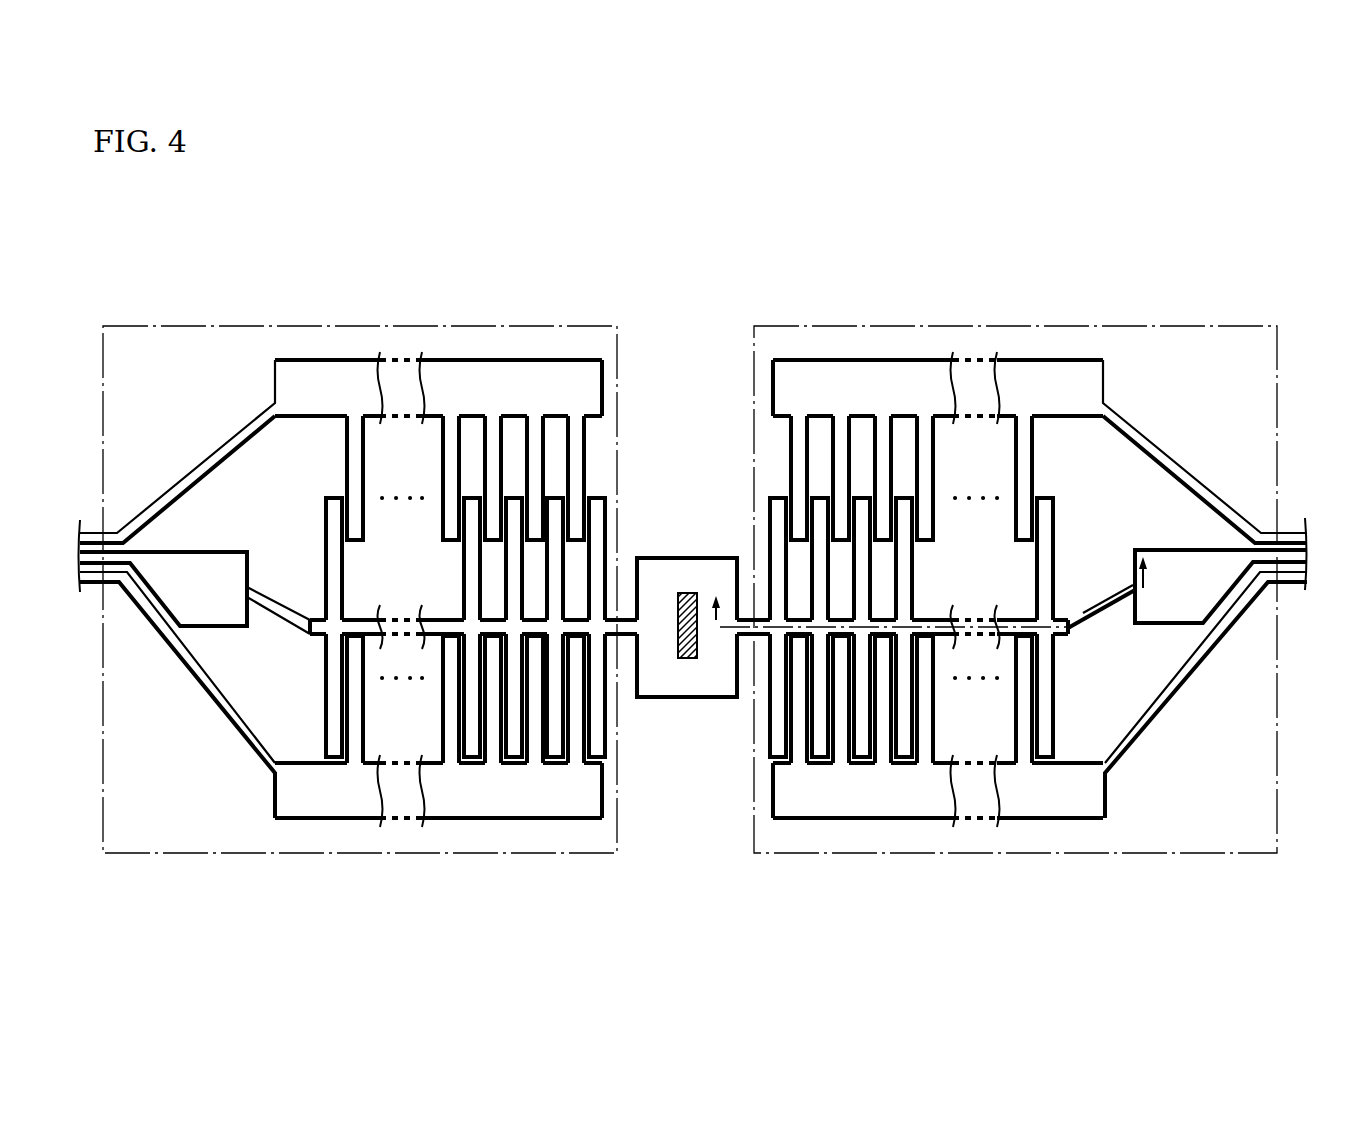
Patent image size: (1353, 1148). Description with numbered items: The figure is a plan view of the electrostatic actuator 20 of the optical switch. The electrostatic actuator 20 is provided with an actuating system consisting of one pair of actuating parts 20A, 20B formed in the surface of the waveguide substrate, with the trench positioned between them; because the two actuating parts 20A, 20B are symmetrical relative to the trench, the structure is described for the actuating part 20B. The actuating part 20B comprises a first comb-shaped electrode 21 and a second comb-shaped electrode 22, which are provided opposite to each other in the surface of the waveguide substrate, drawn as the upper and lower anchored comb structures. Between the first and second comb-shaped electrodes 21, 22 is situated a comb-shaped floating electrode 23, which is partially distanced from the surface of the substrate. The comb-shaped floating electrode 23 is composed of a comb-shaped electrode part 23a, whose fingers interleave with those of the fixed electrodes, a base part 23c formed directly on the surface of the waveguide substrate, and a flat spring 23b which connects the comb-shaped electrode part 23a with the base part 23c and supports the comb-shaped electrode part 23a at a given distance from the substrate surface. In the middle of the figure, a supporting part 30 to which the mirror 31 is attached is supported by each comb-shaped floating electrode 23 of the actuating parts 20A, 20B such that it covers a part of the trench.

The electrostatic actuator 20 is at (774, 288).
The actuating part 20A is at (336, 326).
The actuating part 20B is at (868, 326).
The first comb-shaped electrode 21 is at (552, 396).
The second comb-shaped electrode 22 is at (302, 795).
The comb-shaped floating electrode 23 is at (290, 584).
The comb-shaped electrode part 23a is at (1047, 494).
The flat spring 23b is at (1090, 607).
The base part 23c is at (1230, 552).
The supporting part 30 is at (692, 700).
The mirror 31 is at (689, 593).